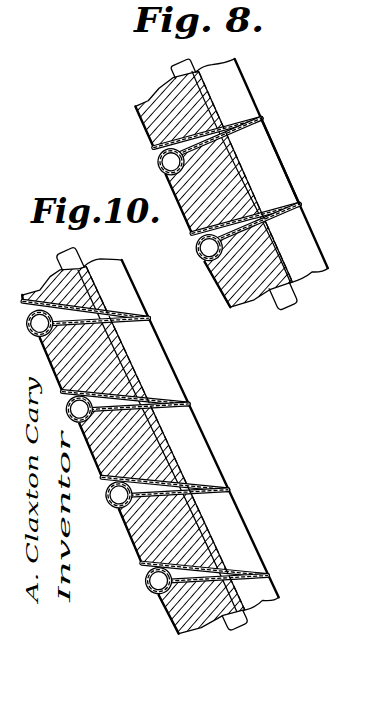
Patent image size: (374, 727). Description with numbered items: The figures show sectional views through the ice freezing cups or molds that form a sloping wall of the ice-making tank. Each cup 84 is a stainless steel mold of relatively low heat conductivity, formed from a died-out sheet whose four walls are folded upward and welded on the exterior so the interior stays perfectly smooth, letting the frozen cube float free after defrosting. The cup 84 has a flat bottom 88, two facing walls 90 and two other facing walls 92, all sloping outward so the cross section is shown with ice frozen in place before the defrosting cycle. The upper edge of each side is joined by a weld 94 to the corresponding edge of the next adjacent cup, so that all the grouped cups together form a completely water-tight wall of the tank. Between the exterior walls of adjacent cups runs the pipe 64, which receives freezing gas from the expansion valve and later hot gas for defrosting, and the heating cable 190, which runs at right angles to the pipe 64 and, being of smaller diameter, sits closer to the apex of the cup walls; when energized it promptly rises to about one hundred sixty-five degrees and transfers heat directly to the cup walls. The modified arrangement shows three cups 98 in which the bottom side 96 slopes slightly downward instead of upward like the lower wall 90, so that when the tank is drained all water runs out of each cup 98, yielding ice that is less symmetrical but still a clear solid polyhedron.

In FIG. 8, the pipe 64 is at (158, 166).
In FIG. 10, the pipe 64 is at (115, 508).
In FIG. 8, the ice freezing cup 84 is at (183, 219).
In FIG. 8, the bottom 88 is at (192, 227).
In FIG. 8, the facing walls 90 is at (265, 137).
In FIG. 8, the facing walls 92 is at (264, 168).
In FIG. 8, the weld 94 is at (253, 119).
In FIG. 8, the heating cable 190 is at (289, 298).
In FIG. 10, the heating cable 190 is at (58, 264).
In FIG. 10, the bottom side 96 is at (157, 395).
In FIG. 10, the cup 98 is at (115, 457).